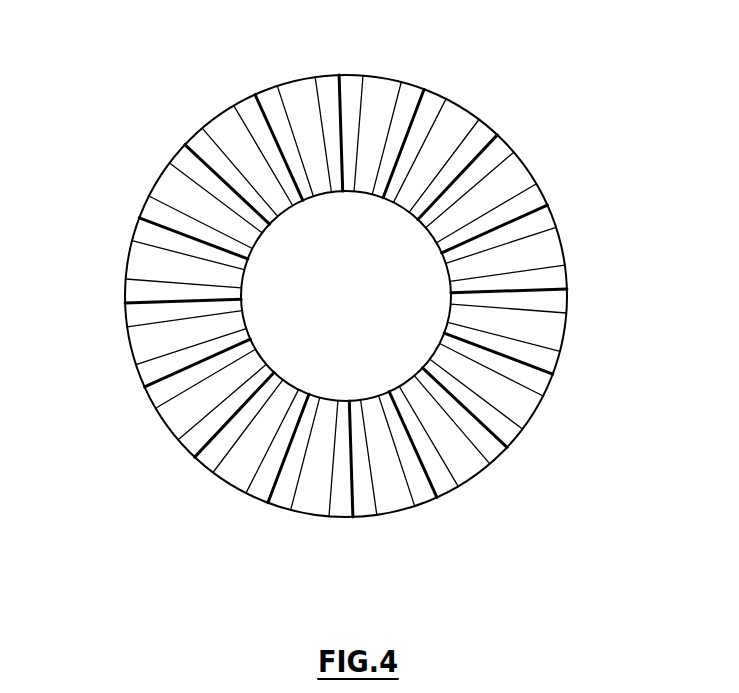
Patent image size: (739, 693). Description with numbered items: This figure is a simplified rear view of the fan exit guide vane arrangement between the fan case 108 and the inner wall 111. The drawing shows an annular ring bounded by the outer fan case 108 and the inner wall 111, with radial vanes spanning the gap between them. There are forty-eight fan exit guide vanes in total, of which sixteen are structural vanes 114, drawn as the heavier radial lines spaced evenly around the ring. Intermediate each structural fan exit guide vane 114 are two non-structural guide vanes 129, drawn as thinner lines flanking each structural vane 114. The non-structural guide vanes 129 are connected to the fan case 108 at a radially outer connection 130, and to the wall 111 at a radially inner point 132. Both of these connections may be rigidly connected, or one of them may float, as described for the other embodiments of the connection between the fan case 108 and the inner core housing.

The fan case 108 is at (164, 424).
The wall 111 is at (373, 190).
The structural vanes 114 is at (338, 74).
The non-structural guide vanes 129 is at (532, 267).
The connection to the fan case 130 is at (567, 272).
The radially inner point 132 is at (455, 276).